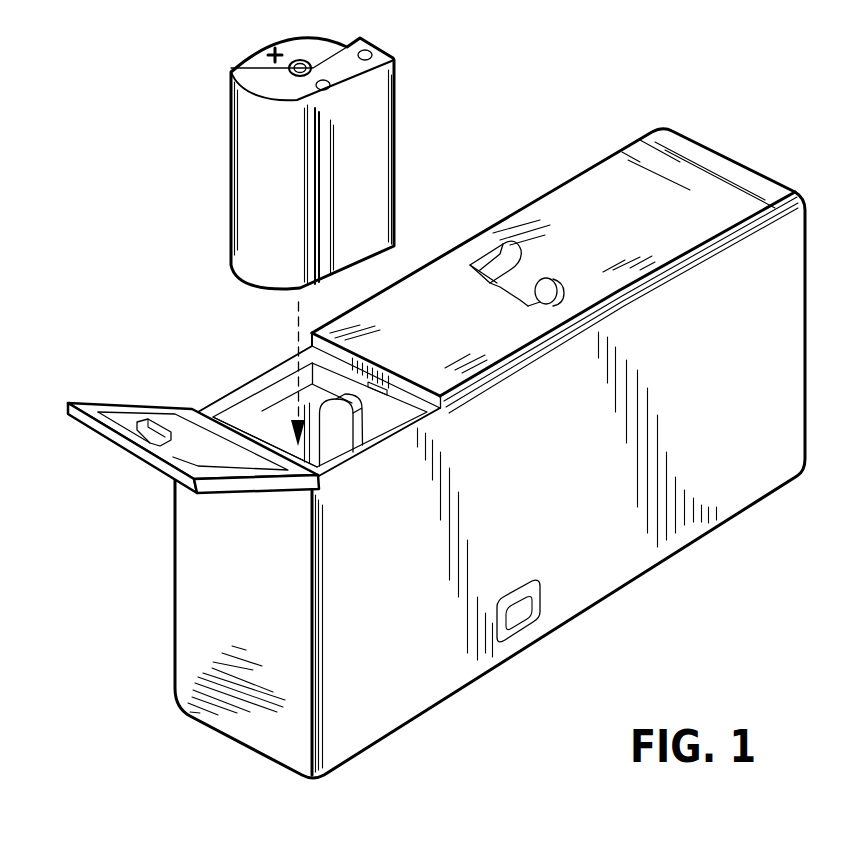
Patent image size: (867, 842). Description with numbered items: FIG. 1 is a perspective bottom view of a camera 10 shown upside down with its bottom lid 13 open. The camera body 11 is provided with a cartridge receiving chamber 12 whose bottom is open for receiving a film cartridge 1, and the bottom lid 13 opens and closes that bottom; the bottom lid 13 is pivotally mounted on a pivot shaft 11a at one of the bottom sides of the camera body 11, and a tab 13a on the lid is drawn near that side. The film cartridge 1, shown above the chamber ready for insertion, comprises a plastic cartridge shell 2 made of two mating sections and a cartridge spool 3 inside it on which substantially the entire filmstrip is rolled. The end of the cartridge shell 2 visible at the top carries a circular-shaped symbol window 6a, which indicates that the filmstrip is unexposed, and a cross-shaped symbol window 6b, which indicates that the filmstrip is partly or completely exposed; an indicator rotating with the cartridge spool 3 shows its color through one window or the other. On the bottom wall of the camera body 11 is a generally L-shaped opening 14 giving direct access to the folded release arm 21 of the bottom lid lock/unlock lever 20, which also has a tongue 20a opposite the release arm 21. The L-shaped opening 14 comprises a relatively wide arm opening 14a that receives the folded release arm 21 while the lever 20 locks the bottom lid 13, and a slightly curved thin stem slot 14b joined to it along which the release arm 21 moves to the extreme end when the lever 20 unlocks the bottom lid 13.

The film cartridge 1 is at (289, 145).
The cartridge shell 2 is at (247, 177).
The cartridge spool 3 is at (298, 77).
The circular-shaped symbol window 6a is at (337, 85).
The cross-shaped symbol window 6b is at (277, 48).
The camera 10 is at (436, 442).
The camera body 11 is at (200, 633).
The pivot shaft 11a is at (230, 430).
The cartridge receiving chamber 12 is at (315, 447).
The bottom lid 13 is at (193, 451).
The lid tab 13a is at (163, 430).
The L-shaped opening 14 is at (519, 256).
The arm opening 14a is at (518, 243).
The stem slot 14b is at (527, 275).
The bottom lid lock/unlock lever 20 is at (555, 281).
The tongue 20a is at (357, 373).
The release arm 21 is at (563, 290).